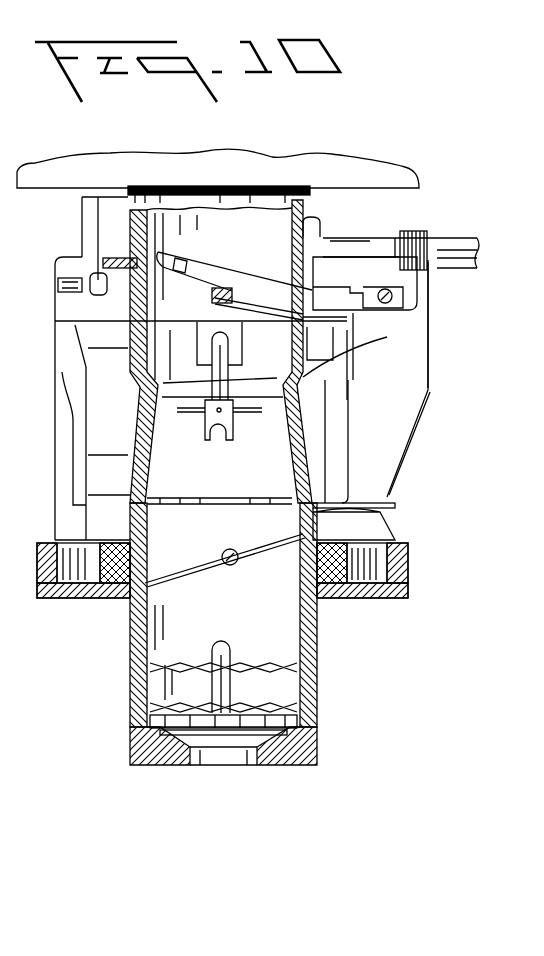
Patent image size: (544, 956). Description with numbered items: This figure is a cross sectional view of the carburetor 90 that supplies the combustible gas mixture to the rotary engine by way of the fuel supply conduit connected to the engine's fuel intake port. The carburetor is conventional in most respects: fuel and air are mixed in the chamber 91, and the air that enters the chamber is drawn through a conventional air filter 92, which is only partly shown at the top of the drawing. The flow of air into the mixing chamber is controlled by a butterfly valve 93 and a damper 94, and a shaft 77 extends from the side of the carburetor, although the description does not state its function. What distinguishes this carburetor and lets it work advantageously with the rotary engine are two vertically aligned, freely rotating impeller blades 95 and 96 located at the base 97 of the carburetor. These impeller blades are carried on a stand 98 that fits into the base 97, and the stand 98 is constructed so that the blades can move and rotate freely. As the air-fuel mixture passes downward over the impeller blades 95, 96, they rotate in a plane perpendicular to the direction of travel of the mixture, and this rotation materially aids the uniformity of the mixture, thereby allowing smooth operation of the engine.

The control shaft 77 is at (466, 236).
The carburetor 90 is at (440, 335).
The chamber 91 is at (262, 461).
The air filter 92 is at (357, 172).
The butterfly valve 93 is at (215, 262).
The damper 94 is at (190, 568).
The impeller blade 95 is at (270, 660).
The impeller blade 96 is at (270, 703).
The base 97 is at (238, 750).
The stand 98 is at (226, 636).